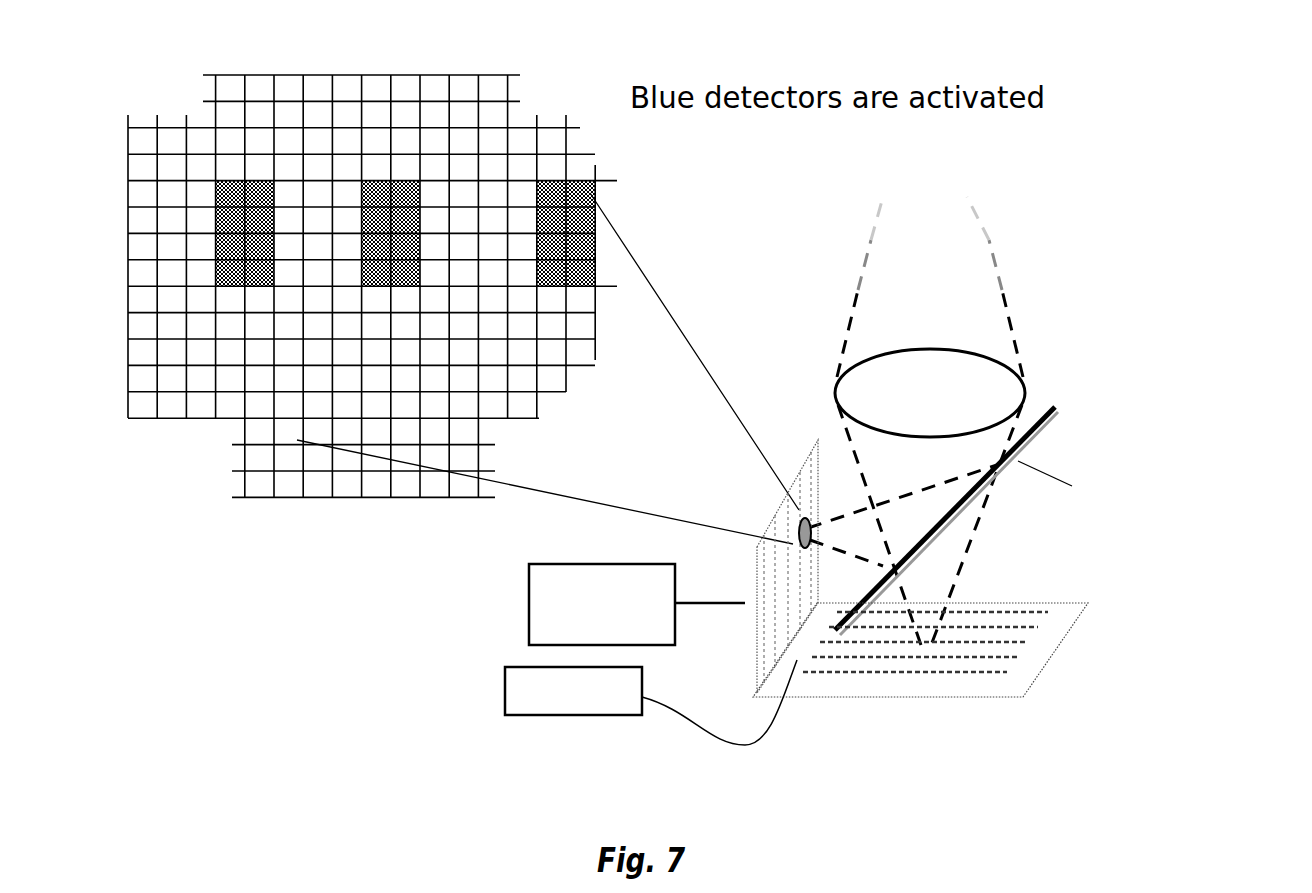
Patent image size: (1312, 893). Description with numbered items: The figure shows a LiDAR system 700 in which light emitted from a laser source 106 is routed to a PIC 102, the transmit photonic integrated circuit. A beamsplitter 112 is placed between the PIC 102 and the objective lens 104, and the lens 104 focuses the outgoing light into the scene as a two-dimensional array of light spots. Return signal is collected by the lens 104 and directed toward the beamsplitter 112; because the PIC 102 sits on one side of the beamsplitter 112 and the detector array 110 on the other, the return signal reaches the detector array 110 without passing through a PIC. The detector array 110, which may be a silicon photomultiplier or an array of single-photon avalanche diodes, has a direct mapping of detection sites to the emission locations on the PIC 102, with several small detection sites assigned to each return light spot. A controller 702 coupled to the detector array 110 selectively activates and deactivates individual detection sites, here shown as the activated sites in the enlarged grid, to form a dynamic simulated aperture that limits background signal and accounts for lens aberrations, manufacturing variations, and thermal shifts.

The LiDAR system 700 is at (1167, 45).
The objective lens 104 is at (1040, 378).
The beamsplitter 112 is at (1050, 435).
The detector array 110 is at (757, 546).
The PIC 102 is at (1068, 650).
The controller 702 is at (508, 603).
The laser source 106 is at (485, 688).